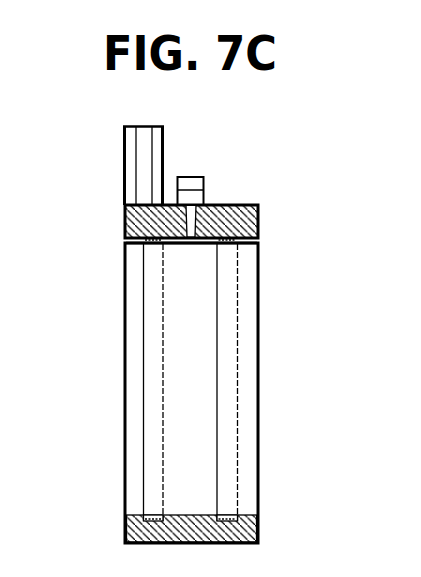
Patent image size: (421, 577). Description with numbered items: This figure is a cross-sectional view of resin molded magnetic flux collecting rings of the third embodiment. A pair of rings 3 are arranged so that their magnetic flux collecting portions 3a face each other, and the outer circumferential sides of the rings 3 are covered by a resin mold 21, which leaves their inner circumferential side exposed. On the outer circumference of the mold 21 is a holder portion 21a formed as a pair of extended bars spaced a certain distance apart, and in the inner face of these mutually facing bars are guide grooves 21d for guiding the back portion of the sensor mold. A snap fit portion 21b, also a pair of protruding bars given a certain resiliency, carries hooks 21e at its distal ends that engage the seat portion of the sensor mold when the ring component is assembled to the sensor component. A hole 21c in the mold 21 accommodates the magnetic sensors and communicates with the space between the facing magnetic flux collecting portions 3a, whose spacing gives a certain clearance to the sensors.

The ring 3 is at (222, 422).
The magnetic flux collecting portion 3a is at (122, 235).
The mold 21 is at (127, 220).
The holder portion 21a is at (127, 152).
The snap fit portion 21b is at (201, 198).
The hole 21c is at (198, 228).
The guide groove 21d is at (147, 143).
The hook 21e is at (192, 180).